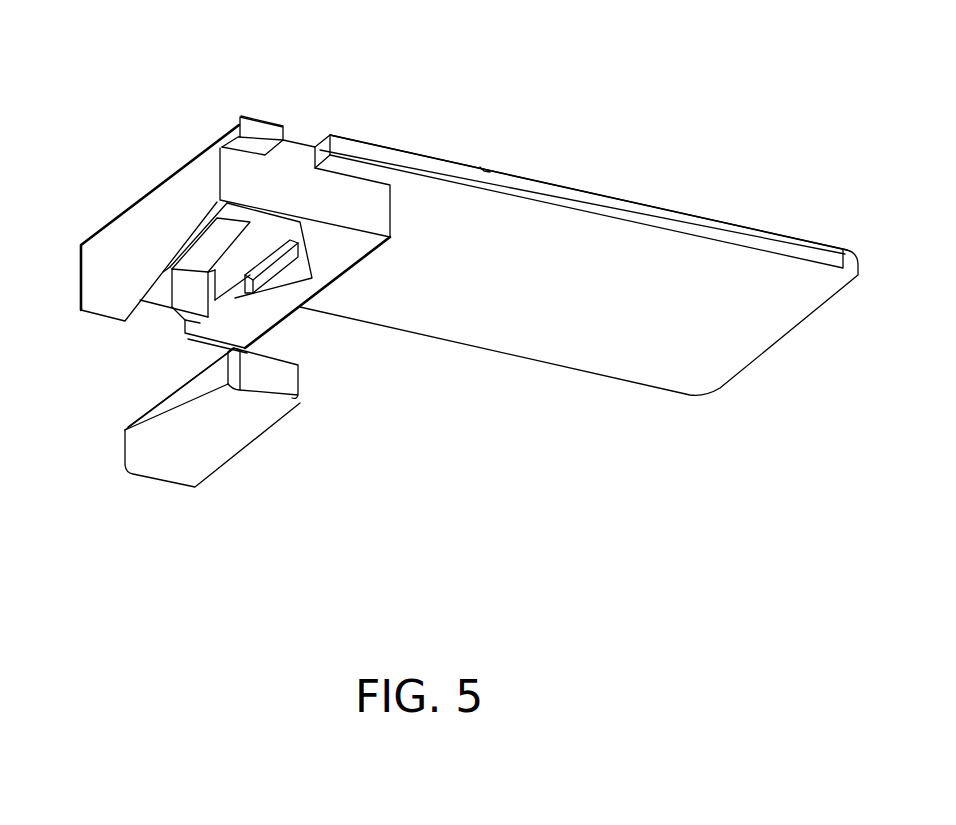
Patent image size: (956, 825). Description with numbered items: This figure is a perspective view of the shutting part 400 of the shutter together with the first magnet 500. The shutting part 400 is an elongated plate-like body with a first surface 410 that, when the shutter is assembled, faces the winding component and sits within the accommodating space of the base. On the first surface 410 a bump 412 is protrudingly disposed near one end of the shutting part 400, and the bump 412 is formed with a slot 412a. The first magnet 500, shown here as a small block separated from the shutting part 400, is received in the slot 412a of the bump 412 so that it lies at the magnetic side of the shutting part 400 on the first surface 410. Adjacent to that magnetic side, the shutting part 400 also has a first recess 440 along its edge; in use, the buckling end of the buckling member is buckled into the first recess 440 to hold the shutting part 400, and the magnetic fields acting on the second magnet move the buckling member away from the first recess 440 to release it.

The shutting part 400 is at (435, 241).
The first surface 410 is at (555, 337).
The bump 412 is at (285, 303).
The slot 412a is at (177, 293).
The first recess 440 is at (303, 135).
The first magnet 500 is at (238, 473).